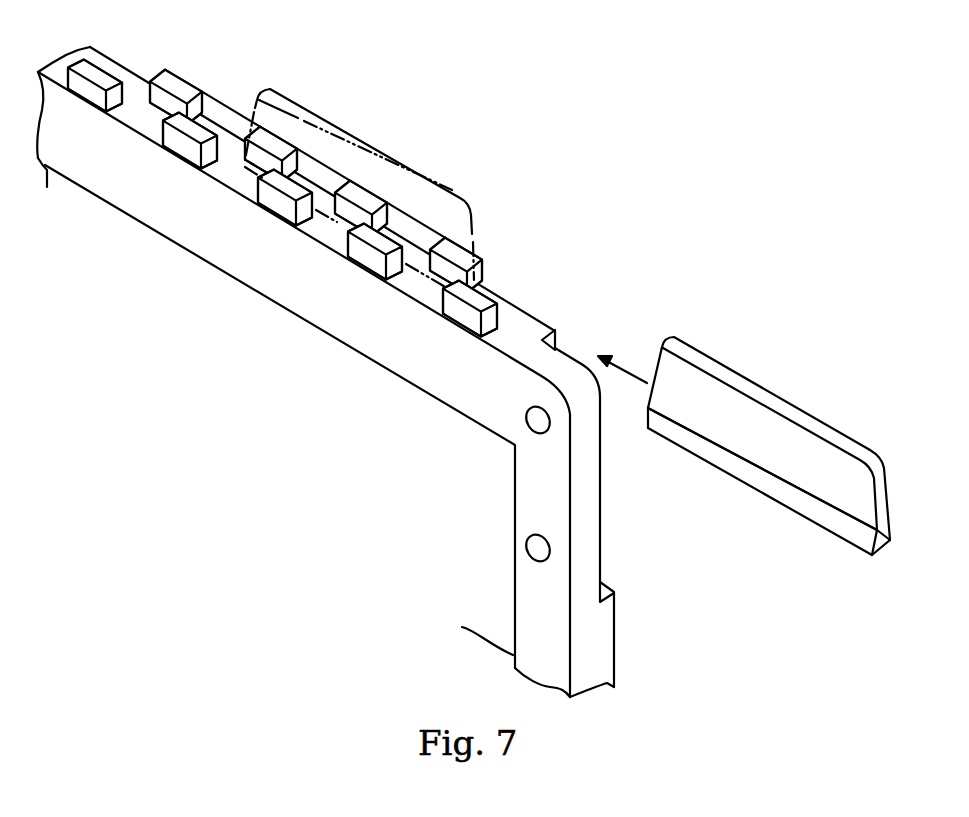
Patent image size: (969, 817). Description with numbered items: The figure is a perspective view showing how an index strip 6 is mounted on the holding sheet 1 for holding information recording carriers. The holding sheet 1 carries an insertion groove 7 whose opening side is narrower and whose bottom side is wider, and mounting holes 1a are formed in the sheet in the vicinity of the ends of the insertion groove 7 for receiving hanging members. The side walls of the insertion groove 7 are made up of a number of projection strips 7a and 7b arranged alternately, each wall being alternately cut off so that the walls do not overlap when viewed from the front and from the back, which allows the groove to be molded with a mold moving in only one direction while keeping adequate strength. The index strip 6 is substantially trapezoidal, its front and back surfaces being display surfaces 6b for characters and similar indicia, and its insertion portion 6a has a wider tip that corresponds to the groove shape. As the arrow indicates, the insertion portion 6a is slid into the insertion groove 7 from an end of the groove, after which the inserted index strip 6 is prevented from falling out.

The holding sheet 1 is at (522, 289).
The mounting holes 1a is at (532, 432).
The index strip 6 is at (430, 203).
The insertion portion 6a is at (733, 467).
The display surfaces 6b is at (735, 400).
The insertion groove 7 is at (137, 103).
The projection strips 7a is at (97, 92).
The projection strips 7b is at (193, 92).